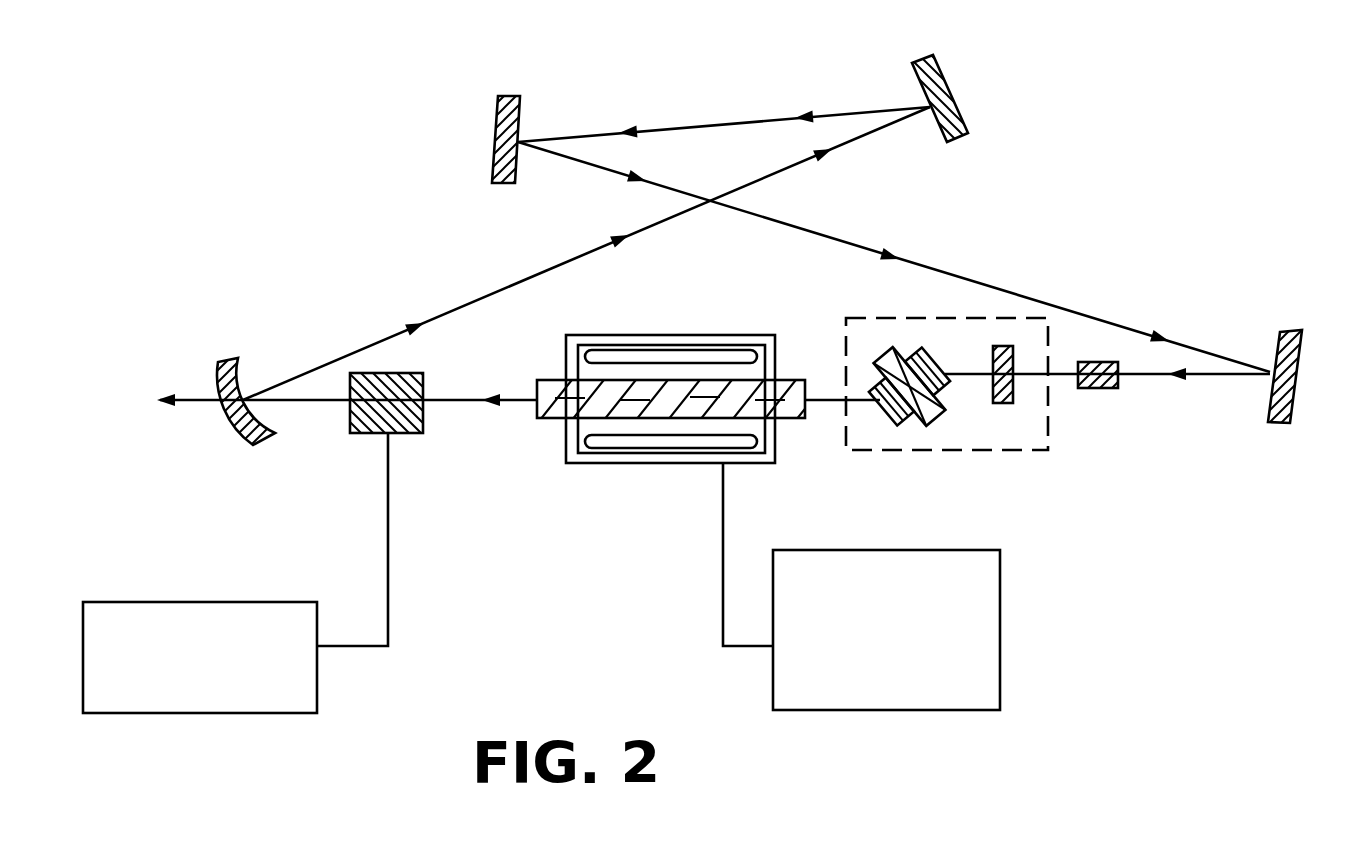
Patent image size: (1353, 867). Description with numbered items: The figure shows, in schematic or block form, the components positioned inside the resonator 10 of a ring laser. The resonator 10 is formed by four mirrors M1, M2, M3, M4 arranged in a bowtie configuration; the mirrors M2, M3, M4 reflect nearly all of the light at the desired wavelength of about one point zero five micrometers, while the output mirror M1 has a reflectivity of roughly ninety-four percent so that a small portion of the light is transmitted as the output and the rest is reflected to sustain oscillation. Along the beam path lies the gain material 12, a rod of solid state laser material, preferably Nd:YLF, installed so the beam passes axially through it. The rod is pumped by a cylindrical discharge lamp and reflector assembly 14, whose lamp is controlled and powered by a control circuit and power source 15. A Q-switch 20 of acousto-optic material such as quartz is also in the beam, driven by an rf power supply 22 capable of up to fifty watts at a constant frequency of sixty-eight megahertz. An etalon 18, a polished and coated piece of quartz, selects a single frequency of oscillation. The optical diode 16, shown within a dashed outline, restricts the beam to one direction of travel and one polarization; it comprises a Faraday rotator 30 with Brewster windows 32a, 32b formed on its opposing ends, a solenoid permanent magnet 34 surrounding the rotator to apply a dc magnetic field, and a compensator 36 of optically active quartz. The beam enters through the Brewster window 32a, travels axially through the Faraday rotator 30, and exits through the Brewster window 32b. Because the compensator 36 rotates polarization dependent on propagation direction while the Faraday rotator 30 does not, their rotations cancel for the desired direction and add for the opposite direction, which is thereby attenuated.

The resonator 10 is at (400, 221).
The gain material 12 is at (543, 418).
The discharge lamp and reflector assembly 14 is at (630, 463).
The control circuit and power source 15 is at (1000, 666).
The optical diode 16 is at (862, 318).
The etalon 18 is at (1110, 388).
The Q-switch 20 is at (370, 433).
The rf power supply 22 is at (272, 602).
The Faraday rotator 30 is at (903, 418).
The Brewster window 32a is at (933, 365).
The Brewster window 32b is at (876, 406).
The solenoid permanent magnet 34 is at (935, 417).
The compensator 36 is at (1003, 403).
The output mirror M1 is at (232, 359).
The mirror M2 is at (952, 82).
The mirror M3 is at (498, 122).
The mirror M4 is at (1278, 340).